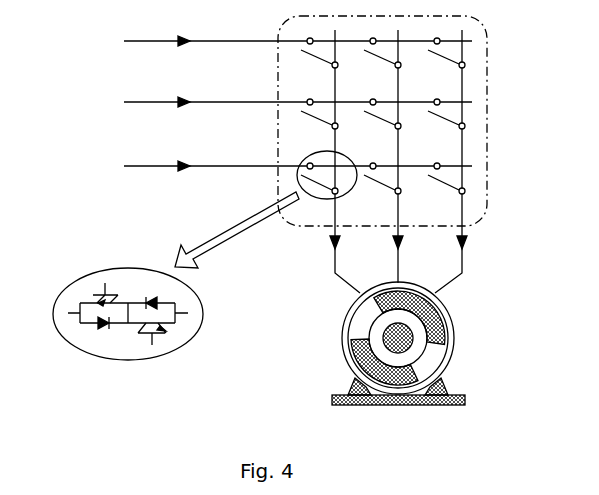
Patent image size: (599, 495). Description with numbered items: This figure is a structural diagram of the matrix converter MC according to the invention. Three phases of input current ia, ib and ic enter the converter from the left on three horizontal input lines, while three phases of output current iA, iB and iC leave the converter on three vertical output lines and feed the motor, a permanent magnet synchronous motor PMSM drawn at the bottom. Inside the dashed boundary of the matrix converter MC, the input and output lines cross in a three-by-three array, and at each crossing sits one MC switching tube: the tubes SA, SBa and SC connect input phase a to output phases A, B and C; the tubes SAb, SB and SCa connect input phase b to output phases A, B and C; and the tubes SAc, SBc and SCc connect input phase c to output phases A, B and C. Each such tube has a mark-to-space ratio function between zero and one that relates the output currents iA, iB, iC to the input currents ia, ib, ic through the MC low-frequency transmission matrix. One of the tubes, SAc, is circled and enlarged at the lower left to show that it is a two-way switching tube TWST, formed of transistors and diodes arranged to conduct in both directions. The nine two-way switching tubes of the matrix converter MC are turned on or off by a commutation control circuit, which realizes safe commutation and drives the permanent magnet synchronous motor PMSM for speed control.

The input phase a current ia is at (298, 32).
The input phase b current ib is at (298, 93).
The input phase c current ic is at (298, 157).
The output phase A current iA is at (345, 161).
The output phase B current iB is at (408, 156).
The output phase C current iC is at (461, 161).
The switching tube S_Aa SA is at (319, 63).
The switching tube S_Ba SBa is at (382, 63).
The switching tube S_Ca SC is at (446, 63).
The switching tube S_Ab SAb is at (319, 125).
The switching tube S_Bb SB is at (382, 125).
The switching tube S_Cb SCa is at (446, 125).
The switching tube S_Ac SAc is at (327, 185).
The switching tube S_Bc SBc is at (382, 191).
The switching tube S_Cc SCc is at (446, 191).
The matrix converter MC is at (279, 262).
The two-way switching tube TWST is at (135, 342).
The permanent magnet synchronous motor PMSM is at (398, 357).